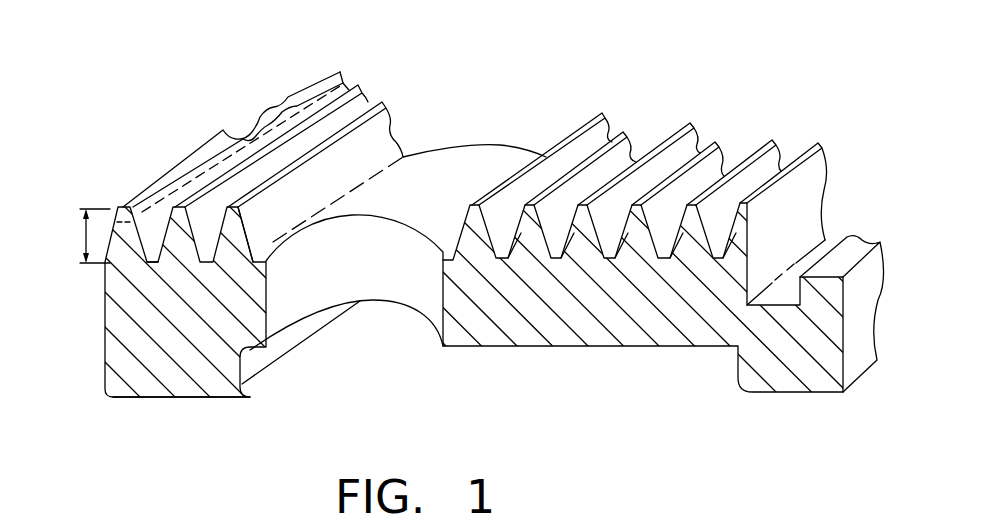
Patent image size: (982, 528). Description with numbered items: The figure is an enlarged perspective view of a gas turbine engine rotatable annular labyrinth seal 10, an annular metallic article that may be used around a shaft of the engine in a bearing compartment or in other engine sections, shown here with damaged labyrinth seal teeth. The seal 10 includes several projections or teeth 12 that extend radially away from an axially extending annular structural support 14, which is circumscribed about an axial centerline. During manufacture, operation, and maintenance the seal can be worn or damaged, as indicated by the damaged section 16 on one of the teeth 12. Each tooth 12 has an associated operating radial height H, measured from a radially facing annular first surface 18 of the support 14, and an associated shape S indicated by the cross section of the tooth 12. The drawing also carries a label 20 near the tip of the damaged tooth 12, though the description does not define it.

The labyrinth seal 10 is at (468, 378).
The teeth 12 is at (125, 252).
The annular structural support 14 is at (173, 398).
The damaged section 16 is at (248, 113).
The first surface 18 is at (153, 260).
The rib tip 20 is at (340, 82).
The shape S is at (235, 238).
The operating radial height H is at (82, 233).